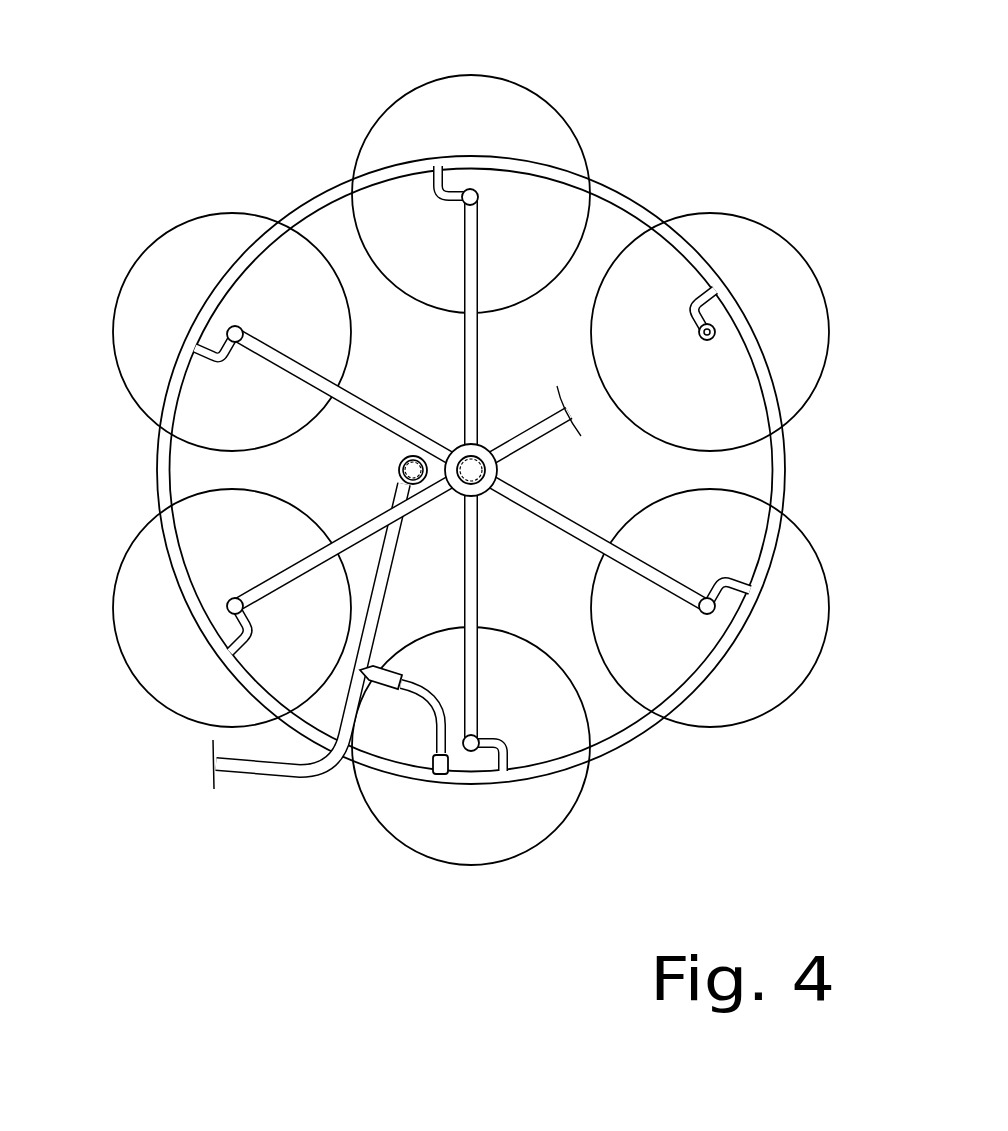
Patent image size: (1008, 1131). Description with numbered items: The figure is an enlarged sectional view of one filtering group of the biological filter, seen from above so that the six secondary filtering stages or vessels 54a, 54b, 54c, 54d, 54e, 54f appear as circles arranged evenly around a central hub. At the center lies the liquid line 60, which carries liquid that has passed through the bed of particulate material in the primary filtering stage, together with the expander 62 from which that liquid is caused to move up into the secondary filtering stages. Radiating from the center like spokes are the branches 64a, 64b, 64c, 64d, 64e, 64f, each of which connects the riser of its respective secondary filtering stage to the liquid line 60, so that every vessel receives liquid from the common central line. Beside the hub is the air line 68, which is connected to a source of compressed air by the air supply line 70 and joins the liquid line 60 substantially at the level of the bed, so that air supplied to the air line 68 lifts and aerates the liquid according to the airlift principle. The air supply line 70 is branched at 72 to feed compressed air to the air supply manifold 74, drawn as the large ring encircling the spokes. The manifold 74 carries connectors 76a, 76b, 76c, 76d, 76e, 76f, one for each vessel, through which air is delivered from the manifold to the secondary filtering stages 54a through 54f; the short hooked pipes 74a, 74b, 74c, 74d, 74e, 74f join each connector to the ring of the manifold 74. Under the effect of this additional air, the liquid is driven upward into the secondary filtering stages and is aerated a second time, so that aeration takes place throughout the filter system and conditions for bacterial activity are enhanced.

The secondary filtering stage 54a is at (776, 258).
The secondary filtering stage 54b is at (805, 607).
The secondary filtering stage 54c is at (558, 800).
The secondary filtering stage 54d is at (148, 640).
The secondary filtering stage 54e is at (152, 322).
The secondary filtering stage 54f is at (530, 119).
The liquid line 60 is at (477, 470).
The expander 62 is at (498, 473).
The branch 64a is at (582, 295).
The branch 64b is at (698, 538).
The branch 64c is at (478, 592).
The branch 64d is at (266, 538).
The branch 64e is at (267, 277).
The branch 64f is at (306, 247).
The air line 68 is at (399, 467).
The air supply line 70 is at (243, 767).
The branch 72 is at (345, 775).
The air supply manifold 74 is at (333, 197).
The branch conduit 74a is at (745, 227).
The branch conduit 74b is at (727, 583).
The branch conduit 74c is at (524, 832).
The branch conduit 74d is at (170, 723).
The branch conduit 74e is at (143, 384).
The branch conduit 74f is at (391, 105).
The connector 76a is at (713, 330).
The connector 76b is at (710, 607).
The connector 76c is at (473, 750).
The connector 76d is at (232, 610).
The connector 76e is at (230, 333).
The connector 76f is at (469, 192).